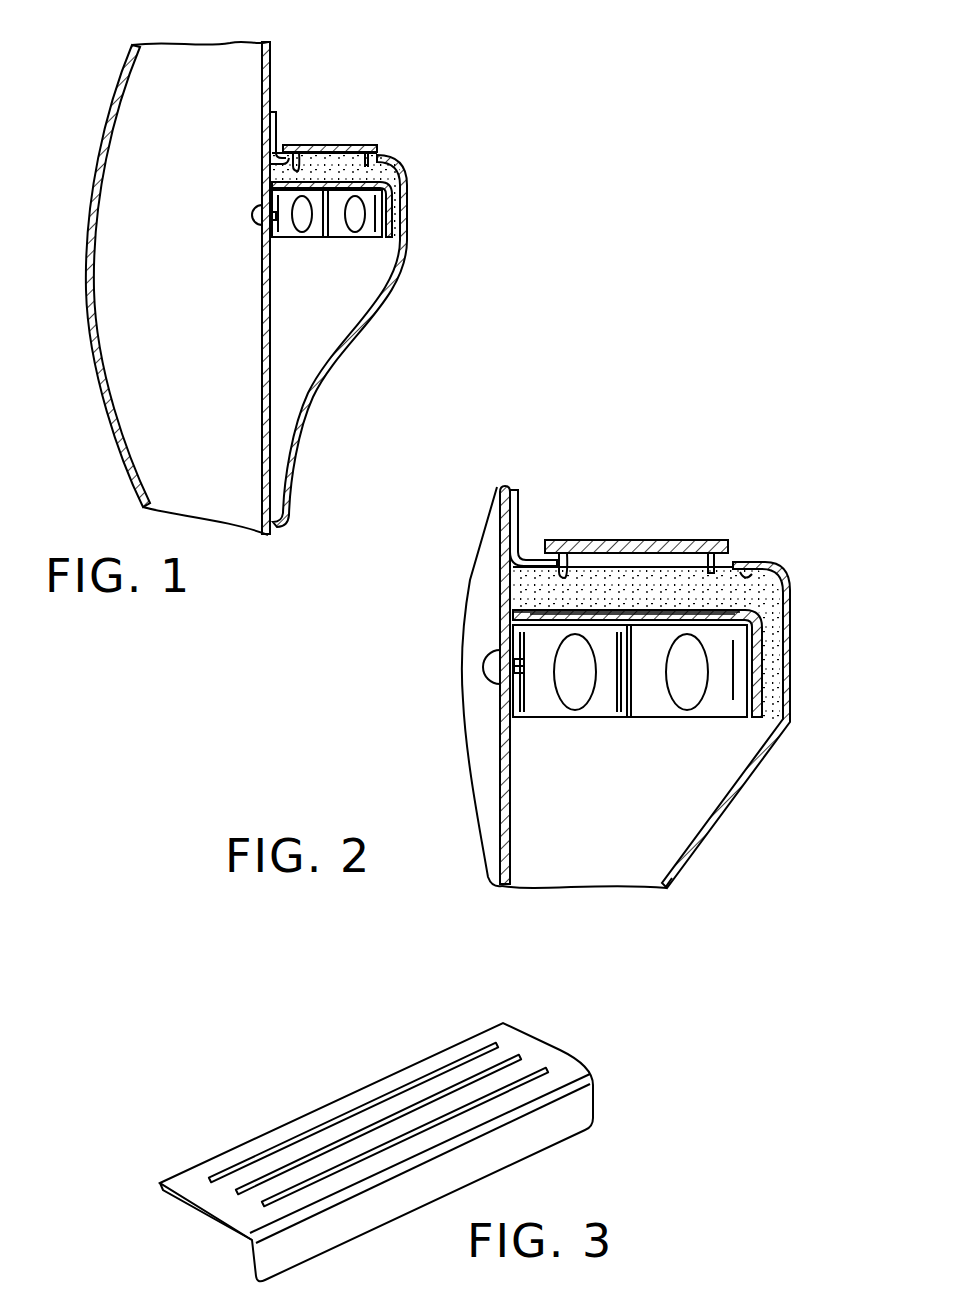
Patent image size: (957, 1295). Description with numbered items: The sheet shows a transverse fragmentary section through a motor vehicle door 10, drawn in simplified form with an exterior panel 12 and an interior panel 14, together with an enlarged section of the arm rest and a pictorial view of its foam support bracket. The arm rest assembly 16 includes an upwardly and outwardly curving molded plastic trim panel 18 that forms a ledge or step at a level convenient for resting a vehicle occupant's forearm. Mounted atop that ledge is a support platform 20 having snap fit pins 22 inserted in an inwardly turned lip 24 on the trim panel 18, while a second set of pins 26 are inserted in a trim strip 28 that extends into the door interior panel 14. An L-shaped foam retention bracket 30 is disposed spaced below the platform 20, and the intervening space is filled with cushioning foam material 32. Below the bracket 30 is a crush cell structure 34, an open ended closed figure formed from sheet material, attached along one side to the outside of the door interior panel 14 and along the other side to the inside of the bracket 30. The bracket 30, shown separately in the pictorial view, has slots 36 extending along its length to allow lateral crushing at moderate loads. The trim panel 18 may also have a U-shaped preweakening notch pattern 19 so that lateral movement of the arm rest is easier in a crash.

In FIG. 1, the motor vehicle door 10 is at (110, 70).
In FIG. 1, the exterior panel 12 is at (90, 150).
In FIG. 1, the interior panel 14 is at (270, 92).
In FIG. 2, the interior panel 14 is at (515, 817).
In FIG. 1, the arm rest assembly 16 is at (400, 153).
In FIG. 1, the trim panel 18 is at (340, 343).
In FIG. 2, the trim panel 18 is at (747, 780).
In FIG. 2, the preweakening notch pattern 19 is at (670, 866).
In FIG. 2, the support platform 20 is at (638, 540).
In FIG. 2, the snap fit pins 22 is at (693, 553).
In FIG. 2, the inwardly turned lip 24 is at (742, 568).
In FIG. 2, the second set of pins 26 is at (587, 537).
In FIG. 2, the trim strip 28 is at (517, 527).
In FIG. 2, the foam retention bracket 30 is at (789, 617).
In FIG. 3, the foam retention bracket 30 is at (582, 1110).
In FIG. 2, the cushioning foam material 32 is at (620, 573).
In FIG. 2, the crush cell structure 34 is at (537, 716).
In FIG. 2, the slots 36 is at (573, 608).
In FIG. 3, the slots 36 is at (336, 1147).